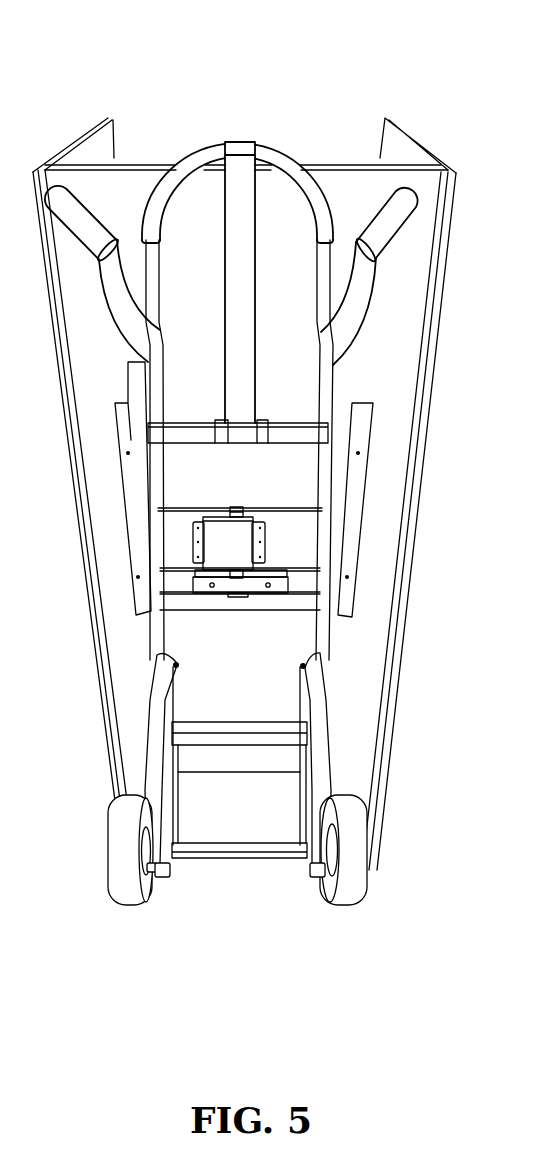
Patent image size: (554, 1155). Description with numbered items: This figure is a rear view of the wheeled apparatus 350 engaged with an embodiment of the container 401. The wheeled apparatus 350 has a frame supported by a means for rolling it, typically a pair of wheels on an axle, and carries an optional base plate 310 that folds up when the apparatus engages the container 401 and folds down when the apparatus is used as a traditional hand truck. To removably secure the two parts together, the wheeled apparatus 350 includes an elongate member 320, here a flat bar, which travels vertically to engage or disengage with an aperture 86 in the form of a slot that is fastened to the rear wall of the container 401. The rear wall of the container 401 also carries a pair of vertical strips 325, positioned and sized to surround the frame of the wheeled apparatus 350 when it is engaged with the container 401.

The wheeled apparatus 350 is at (197, 136).
The container 401 is at (97, 393).
The elongate member 320 is at (232, 507).
The vertical strips 325 is at (134, 555).
The aperture 86 is at (236, 577).
The base plate 310 is at (272, 823).